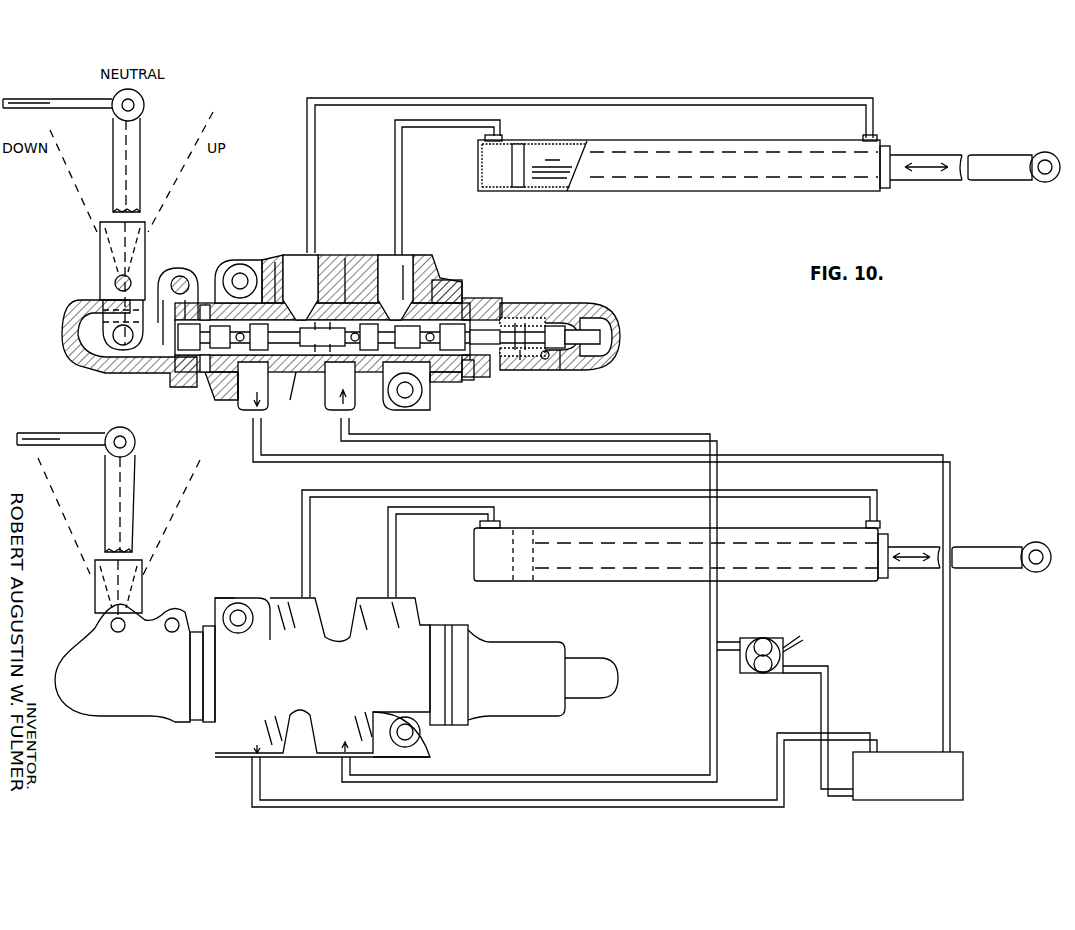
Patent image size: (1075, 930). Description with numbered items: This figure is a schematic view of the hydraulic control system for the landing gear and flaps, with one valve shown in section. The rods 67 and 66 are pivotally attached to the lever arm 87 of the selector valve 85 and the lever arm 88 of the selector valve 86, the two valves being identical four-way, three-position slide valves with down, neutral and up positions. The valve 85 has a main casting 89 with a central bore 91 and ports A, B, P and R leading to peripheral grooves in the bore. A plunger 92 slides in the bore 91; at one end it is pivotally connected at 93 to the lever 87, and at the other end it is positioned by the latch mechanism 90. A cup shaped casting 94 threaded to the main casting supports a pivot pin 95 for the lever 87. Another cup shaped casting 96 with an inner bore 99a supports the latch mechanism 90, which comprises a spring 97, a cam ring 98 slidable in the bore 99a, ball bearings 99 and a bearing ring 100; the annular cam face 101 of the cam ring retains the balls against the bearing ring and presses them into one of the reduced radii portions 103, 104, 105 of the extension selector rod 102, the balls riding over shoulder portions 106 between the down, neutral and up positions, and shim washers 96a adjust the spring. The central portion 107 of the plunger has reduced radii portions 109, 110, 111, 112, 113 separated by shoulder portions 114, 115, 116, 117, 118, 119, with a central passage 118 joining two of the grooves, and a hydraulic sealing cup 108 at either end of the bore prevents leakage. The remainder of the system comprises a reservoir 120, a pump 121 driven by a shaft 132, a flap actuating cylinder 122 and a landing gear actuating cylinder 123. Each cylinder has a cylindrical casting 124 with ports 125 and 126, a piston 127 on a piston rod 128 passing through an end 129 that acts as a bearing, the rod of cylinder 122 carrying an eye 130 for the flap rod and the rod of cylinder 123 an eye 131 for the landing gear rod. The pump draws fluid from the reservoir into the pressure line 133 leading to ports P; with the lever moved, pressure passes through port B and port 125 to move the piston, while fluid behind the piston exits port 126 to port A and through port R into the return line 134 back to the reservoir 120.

The rod 66 is at (62, 436).
The rod 67 is at (44, 100).
The selector valve 85 is at (343, 485).
The selector valve 86 is at (492, 612).
The lever arm 87 is at (113, 162).
The lever arm 88 is at (108, 493).
The main casting 89 is at (275, 262).
The latch mechanism 90 is at (538, 322).
The central bore 91 is at (345, 258).
The plunger 92 is at (180, 270).
The pivotal connection 93 is at (78, 330).
The cup shaped casting 94 is at (150, 352).
The pivot pin 95 is at (114, 282).
The cup shaped casting 96 is at (465, 382).
The shim washers 96a is at (442, 384).
The spring 97 is at (505, 340).
The cam ring 98 is at (548, 360).
The ball bearing 99 is at (548, 320).
The inner bore 99a is at (488, 318).
The bearing ring 100 is at (570, 360).
The annular cam face 101 is at (570, 372).
The extension selector rod 102 is at (500, 365).
The reduced radii portion 103 is at (530, 322).
The reduced radii portion 104 is at (568, 330).
The reduced radii portion 105 is at (598, 336).
The shoulder portion 106 is at (520, 360).
The central portion 107 is at (225, 380).
The hydraulic sealing cup 108 is at (222, 300).
The reduced radii portion 109 is at (242, 275).
The reduced radii portion 110 is at (257, 411).
The reduced radii portion 111 is at (292, 398).
The reduced radii portion 112 is at (368, 262).
The reduced radii portion 113 is at (403, 262).
The shoulder portion 114 is at (238, 395).
The shoulder portion 115 is at (307, 248).
The shoulder portion 116 is at (338, 414).
The shoulder portion 117 is at (385, 412).
The central passage 118 is at (300, 287).
The shoulder portion 119 is at (212, 372).
The reservoir 120 is at (918, 752).
The pump 121 is at (775, 638).
The flap actuating cylinder 122 is at (696, 580).
The landing gear actuating cylinder 123 is at (699, 166).
The cylindrical casting 124 is at (578, 141).
The port 125 is at (480, 145).
The port 126 is at (878, 138).
The piston 127 is at (520, 190).
The piston rod 128 is at (562, 185).
The end 129 is at (888, 186).
The eye 130 is at (1038, 548).
The eye 131 is at (1043, 158).
The shaft 132 is at (800, 636).
The pressure line 133 is at (664, 440).
The return line 134 is at (512, 456).